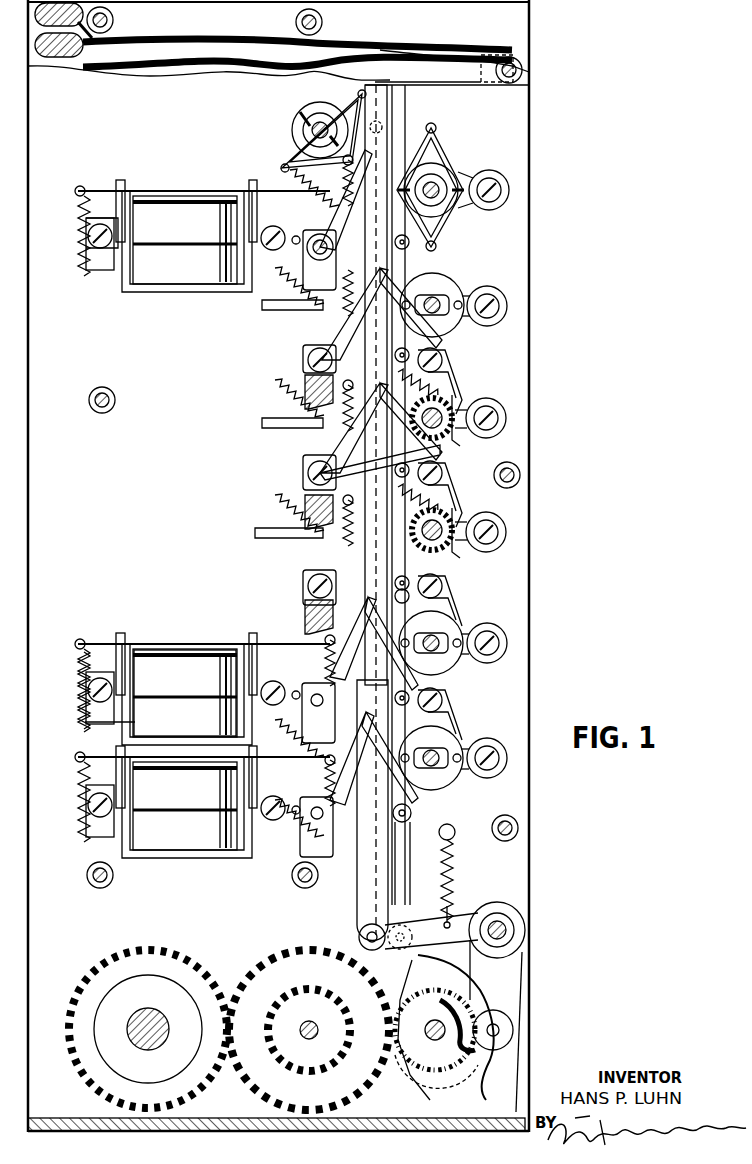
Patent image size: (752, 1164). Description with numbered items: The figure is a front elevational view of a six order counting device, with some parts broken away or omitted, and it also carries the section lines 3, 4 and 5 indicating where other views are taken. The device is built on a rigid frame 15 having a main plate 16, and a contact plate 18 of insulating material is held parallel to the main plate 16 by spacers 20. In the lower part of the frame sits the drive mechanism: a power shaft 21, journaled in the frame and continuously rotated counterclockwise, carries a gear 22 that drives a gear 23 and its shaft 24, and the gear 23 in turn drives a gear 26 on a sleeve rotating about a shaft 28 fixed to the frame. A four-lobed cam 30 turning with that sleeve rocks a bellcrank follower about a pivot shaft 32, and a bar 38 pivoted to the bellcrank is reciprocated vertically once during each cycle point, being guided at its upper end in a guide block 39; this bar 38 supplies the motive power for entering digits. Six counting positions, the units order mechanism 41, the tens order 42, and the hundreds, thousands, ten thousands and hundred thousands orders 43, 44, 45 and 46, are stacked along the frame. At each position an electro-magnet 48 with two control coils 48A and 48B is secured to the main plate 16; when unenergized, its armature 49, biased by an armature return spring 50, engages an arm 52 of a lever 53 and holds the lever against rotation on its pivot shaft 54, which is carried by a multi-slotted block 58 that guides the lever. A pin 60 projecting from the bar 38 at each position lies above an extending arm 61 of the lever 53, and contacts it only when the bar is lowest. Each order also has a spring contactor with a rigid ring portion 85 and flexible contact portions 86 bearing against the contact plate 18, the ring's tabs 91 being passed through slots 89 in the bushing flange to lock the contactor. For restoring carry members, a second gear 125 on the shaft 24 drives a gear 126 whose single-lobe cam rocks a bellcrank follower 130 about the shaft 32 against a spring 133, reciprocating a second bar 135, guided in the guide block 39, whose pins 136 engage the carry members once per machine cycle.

The frame 15 is at (536, 1035).
The main plate 16 is at (529, 800).
The contact plate 18 is at (529, 42).
The spacers 20 is at (504, 58).
The power shaft 21 is at (134, 1010).
The gear 22 is at (68, 997).
The gear 23 is at (258, 1074).
The shaft 24 is at (302, 1008).
The gear 26 is at (470, 1070).
The shaft 28 is at (428, 1008).
The cam 30 is at (478, 1052).
The pivot shaft 32 is at (490, 915).
The bar 38 is at (388, 885).
The guide block 39 is at (462, 86).
The units order mechanism 41 is at (508, 690).
The tens order counting mechanism 42 is at (508, 592).
The hundreds order counting mechanism 43 is at (508, 493).
The thousands order counting mechanism 44 is at (508, 380).
The ten thousands order counting mechanism 45 is at (508, 243).
The hundred thousands order counting mechanism 46 is at (508, 127).
The electro-magnet 48 is at (140, 298).
The control coil 48A is at (135, 718).
The control coil 48B is at (192, 660).
The armature 49 is at (150, 648).
The armature return spring 50 is at (78, 676).
The arm 52 is at (302, 642).
The lever 53 is at (318, 205).
The pivot shaft 54 is at (319, 417).
The multi-slotted block 58 is at (300, 856).
The pin 60 is at (410, 806).
The extending arm 61 is at (406, 830).
The ring portion 85 is at (440, 210).
The flexible contact portions 86 is at (446, 160).
The slots 89 is at (445, 180).
The tabs 91 is at (480, 212).
The second gear 125 is at (272, 1010).
The gear 126 is at (358, 984).
The bellcrank follower 130 is at (516, 1000).
The spring 133 is at (452, 858).
The bar 135 is at (360, 895).
The pin 136 is at (382, 122).
The section line 3- 3 is at (272, 356).
The section line 4- 4 is at (228, 400).
The section line 5- 5 is at (592, 950).